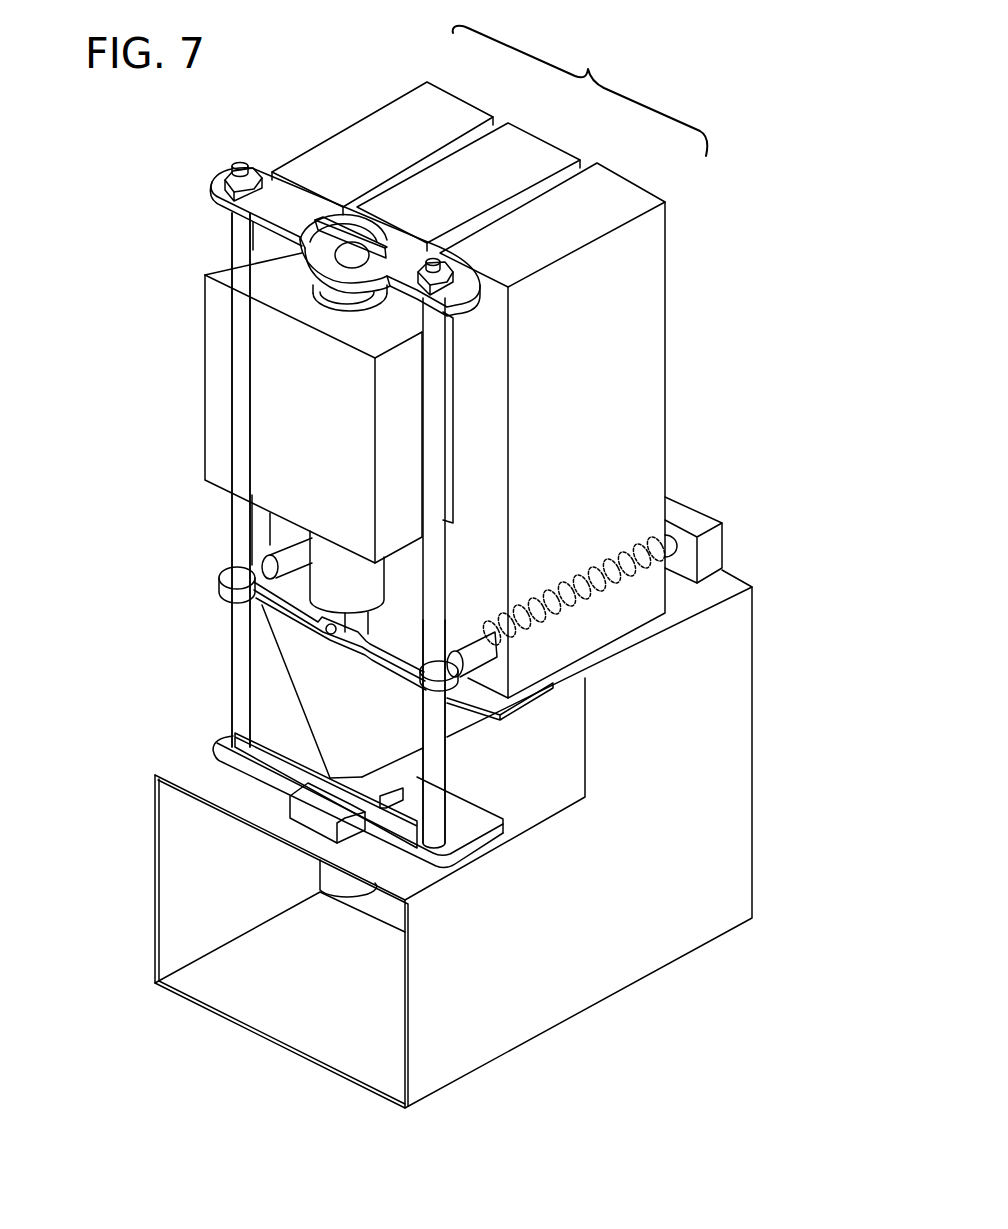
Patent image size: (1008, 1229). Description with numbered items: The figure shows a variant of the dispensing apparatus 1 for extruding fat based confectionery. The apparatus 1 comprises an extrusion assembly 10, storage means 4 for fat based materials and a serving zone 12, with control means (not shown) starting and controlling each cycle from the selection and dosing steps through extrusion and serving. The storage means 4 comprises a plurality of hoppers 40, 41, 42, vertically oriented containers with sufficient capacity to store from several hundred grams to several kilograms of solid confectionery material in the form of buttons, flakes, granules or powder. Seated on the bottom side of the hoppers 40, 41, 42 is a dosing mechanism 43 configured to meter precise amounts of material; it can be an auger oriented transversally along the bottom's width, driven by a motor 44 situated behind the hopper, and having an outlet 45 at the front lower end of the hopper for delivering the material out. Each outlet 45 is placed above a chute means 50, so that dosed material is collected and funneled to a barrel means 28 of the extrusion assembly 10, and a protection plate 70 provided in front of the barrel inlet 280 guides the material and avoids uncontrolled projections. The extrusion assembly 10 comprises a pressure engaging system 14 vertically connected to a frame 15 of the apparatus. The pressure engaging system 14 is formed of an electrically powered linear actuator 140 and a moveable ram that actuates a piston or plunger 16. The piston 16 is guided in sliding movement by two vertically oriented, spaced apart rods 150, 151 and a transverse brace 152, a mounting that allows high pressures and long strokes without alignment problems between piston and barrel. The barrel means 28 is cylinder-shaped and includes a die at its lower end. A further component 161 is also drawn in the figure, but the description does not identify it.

The apparatus 1 is at (100, 293).
The storage means 4 is at (580, 91).
The extrusion assembly 10 is at (102, 570).
The serving zone 12 is at (303, 990).
The pressure engaging system 14 is at (220, 665).
The frame 15 is at (455, 556).
The piston 16 is at (343, 655).
The barrel means 28 is at (308, 865).
The hopper 40 is at (616, 195).
The hopper 41 is at (530, 155).
The hopper 42 is at (445, 112).
The dosing mechanism 43 is at (590, 556).
The motor 44 is at (693, 518).
The outlet 45 is at (547, 680).
The chute means 50 is at (456, 753).
The protection plate 70 is at (278, 765).
The electrically powered linear actuator 140 is at (232, 393).
The rod 150 is at (436, 613).
The rod 151 is at (237, 546).
The transverse brace 152 is at (233, 604).
The pivot pin 161 is at (330, 553).
The barrel inlet 280 is at (323, 793).